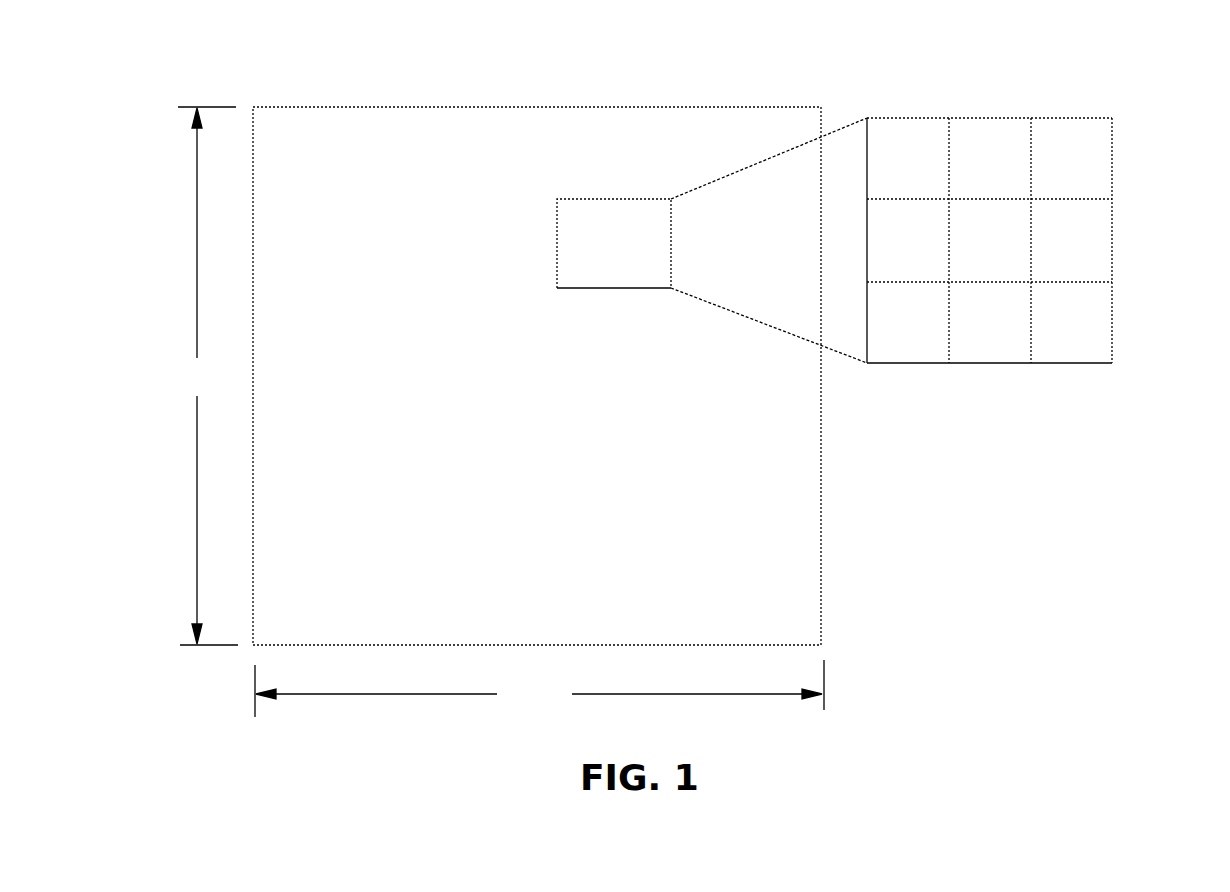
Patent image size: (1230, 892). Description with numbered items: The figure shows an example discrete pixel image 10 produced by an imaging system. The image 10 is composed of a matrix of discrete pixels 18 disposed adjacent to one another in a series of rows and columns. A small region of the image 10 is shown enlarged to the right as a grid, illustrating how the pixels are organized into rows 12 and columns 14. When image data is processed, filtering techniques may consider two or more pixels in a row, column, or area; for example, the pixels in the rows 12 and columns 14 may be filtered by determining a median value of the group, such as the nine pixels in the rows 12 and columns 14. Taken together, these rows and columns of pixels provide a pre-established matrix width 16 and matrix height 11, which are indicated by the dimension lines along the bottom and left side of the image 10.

The discrete pixel image 10 is at (360, 107).
The matrix height 11 is at (208, 376).
The rows 12 is at (1087, 325).
The columns 14 is at (1047, 138).
The matrix width 16 is at (539, 688).
The discrete pixels 18 is at (613, 199).